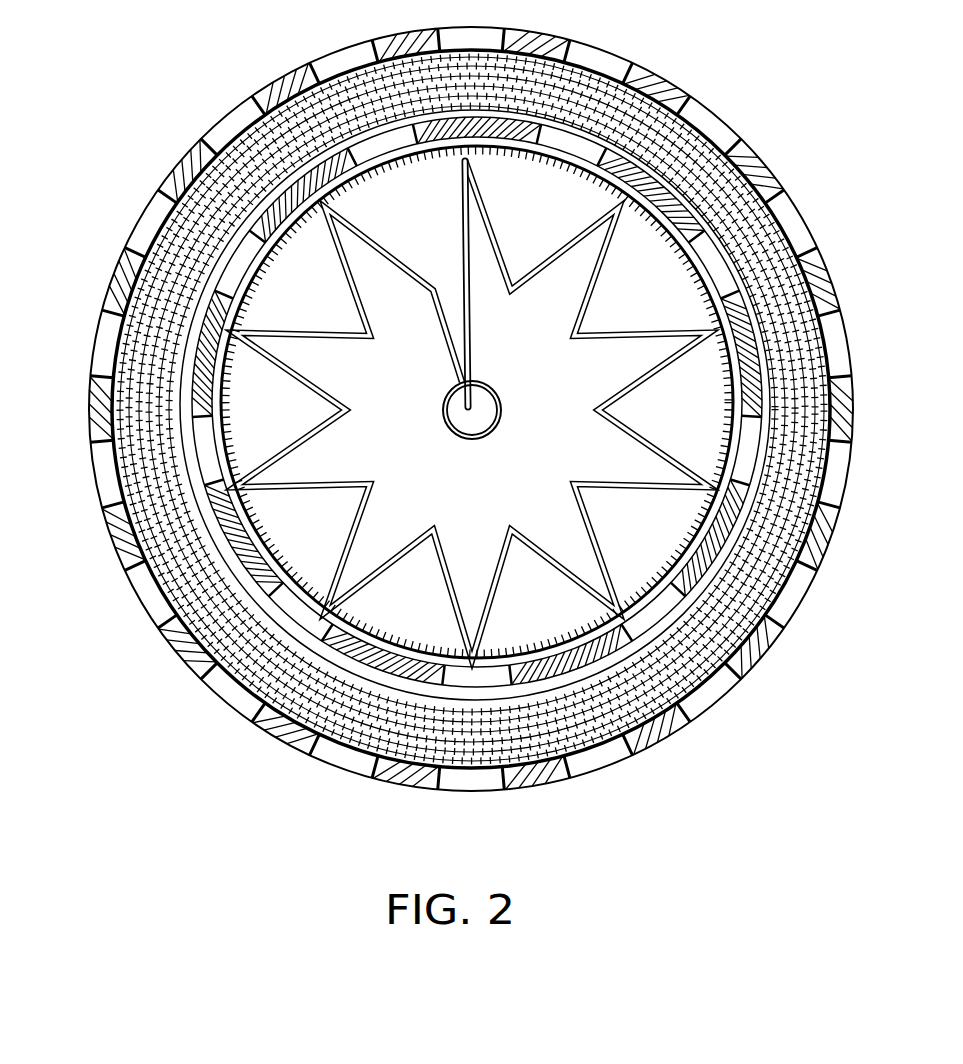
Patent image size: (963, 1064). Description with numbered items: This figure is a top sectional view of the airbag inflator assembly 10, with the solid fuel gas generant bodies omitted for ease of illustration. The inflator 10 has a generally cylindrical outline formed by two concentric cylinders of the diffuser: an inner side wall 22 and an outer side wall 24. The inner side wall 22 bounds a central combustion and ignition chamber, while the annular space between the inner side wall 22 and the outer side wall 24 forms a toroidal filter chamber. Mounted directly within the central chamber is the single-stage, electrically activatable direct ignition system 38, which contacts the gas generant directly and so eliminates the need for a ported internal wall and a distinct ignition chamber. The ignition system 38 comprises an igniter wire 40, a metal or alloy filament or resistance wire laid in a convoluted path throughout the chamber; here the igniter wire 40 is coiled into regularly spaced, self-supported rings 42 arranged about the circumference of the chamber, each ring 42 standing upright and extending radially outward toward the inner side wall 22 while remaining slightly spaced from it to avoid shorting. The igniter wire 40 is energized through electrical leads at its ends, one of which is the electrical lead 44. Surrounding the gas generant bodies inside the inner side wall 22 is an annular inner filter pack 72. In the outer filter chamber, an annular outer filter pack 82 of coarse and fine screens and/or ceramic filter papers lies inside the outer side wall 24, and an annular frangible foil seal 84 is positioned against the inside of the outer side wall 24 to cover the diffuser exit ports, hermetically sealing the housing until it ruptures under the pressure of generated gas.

The inflator assembly 10 is at (124, 229).
The inner side wall 22 is at (285, 232).
The outer side wall 24 is at (660, 78).
The direct ignition system 38 is at (377, 400).
The igniter wire 40 is at (495, 238).
The rings 42 is at (723, 273).
The electrical lead 44 is at (708, 130).
The inner filter pack 72 is at (393, 157).
The outer filter pack 82 is at (337, 100).
The frangible foil seal 84 is at (232, 138).